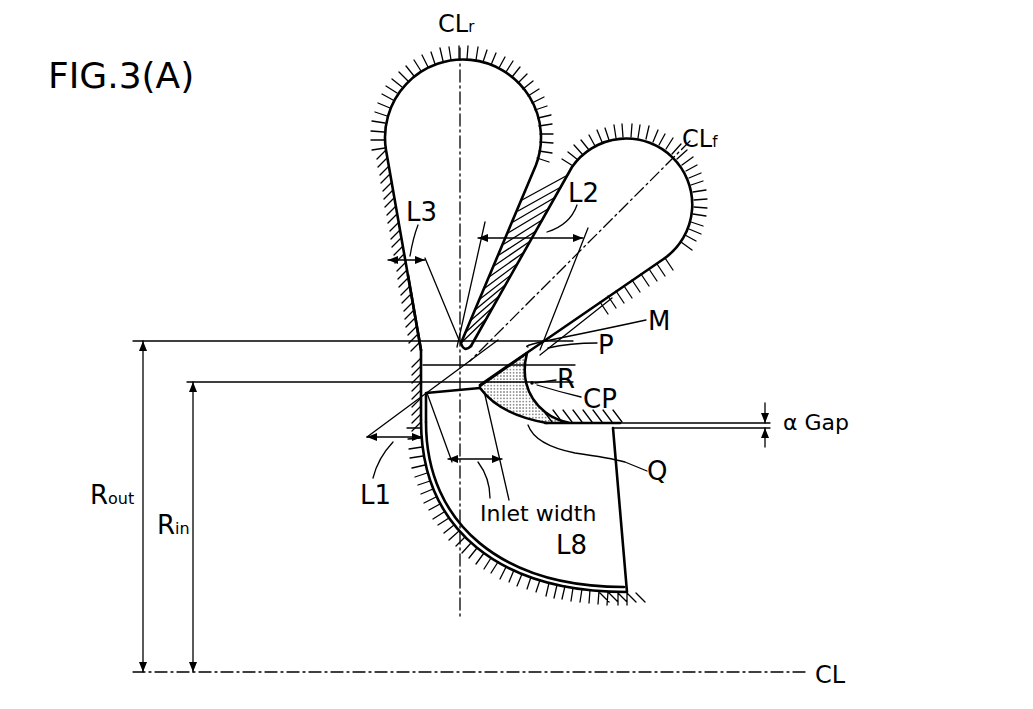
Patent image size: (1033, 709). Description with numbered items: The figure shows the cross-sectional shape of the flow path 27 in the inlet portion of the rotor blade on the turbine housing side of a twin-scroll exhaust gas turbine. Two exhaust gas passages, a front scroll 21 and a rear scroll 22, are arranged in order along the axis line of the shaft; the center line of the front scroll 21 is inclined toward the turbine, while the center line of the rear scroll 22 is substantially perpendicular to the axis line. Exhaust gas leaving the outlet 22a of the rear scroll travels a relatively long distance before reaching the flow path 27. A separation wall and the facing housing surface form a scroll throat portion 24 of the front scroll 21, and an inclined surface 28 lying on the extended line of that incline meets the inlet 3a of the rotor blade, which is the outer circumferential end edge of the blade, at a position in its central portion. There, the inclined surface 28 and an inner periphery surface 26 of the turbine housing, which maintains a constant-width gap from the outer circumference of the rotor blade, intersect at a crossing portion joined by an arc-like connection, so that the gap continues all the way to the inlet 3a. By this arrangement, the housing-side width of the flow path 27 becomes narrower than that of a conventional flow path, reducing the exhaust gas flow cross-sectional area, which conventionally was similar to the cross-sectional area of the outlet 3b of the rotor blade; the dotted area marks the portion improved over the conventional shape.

The front scroll 21 is at (637, 163).
The rear scroll 22 is at (497, 82).
The outlet of the rear scroll 22a is at (427, 338).
The scroll throat portion 24 is at (488, 332).
The inner periphery surface 26 is at (572, 428).
The flow path 27 is at (427, 373).
The inclined surface 28 is at (520, 378).
The inlet of the rotor blade 3a is at (413, 390).
The outlet of the rotor blade 3b is at (610, 512).